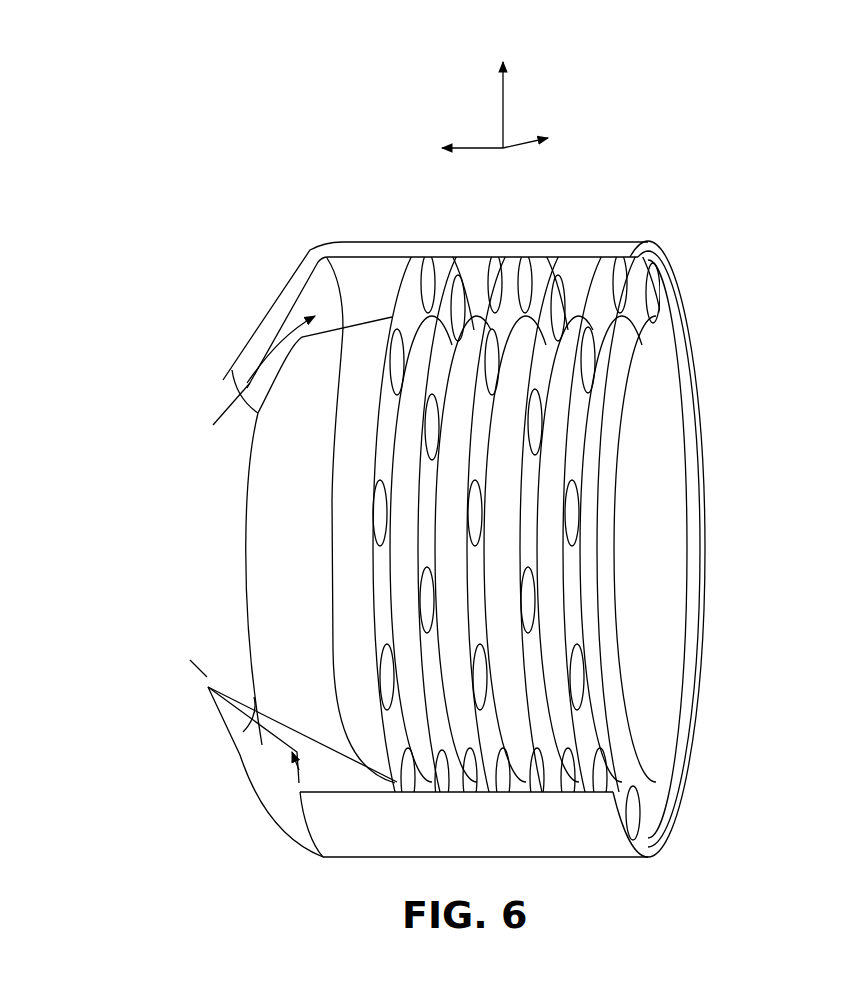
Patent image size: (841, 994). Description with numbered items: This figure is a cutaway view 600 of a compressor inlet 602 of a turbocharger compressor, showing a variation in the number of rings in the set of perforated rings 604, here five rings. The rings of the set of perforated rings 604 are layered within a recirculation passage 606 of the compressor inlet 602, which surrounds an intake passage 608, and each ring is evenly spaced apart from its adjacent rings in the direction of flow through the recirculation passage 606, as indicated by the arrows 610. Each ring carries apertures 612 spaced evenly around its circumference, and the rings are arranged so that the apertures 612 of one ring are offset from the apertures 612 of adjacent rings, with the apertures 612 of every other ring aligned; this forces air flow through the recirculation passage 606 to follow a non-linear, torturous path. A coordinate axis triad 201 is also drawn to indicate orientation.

The cutaway view 600 is at (150, 180).
The compressor inlet 602 is at (274, 252).
The set of perforated rings 604 is at (625, 214).
The recirculation passage 606 is at (377, 270).
The intake passage 608 is at (662, 436).
The arrows 610 is at (232, 406).
The apertures 612 is at (528, 592).
The coordinate system 201 is at (487, 133).